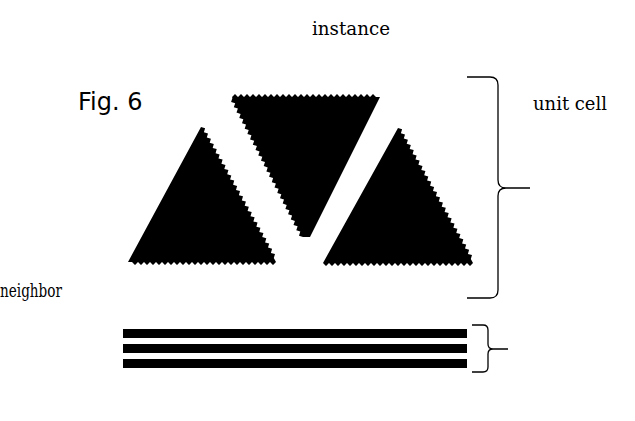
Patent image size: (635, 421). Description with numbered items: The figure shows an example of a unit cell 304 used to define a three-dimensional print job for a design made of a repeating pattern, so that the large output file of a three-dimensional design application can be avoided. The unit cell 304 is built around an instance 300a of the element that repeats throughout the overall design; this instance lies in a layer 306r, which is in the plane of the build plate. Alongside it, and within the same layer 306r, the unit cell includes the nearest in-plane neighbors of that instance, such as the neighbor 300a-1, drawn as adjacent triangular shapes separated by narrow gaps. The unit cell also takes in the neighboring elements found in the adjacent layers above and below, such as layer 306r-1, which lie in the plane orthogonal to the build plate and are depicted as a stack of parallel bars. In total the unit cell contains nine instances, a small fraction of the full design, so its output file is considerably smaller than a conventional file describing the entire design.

The instance of the repeating element 300a is at (349, 94).
The neighbor instance 300a-1 is at (153, 268).
The unit cell 304 is at (325, 233).
The neighboring layer 306r-1 is at (123, 333).
The layer 306r is at (123, 348).